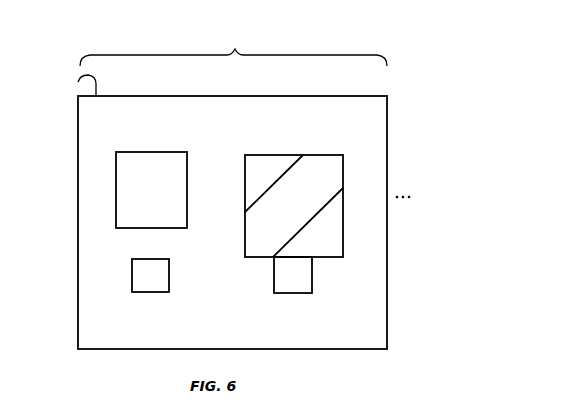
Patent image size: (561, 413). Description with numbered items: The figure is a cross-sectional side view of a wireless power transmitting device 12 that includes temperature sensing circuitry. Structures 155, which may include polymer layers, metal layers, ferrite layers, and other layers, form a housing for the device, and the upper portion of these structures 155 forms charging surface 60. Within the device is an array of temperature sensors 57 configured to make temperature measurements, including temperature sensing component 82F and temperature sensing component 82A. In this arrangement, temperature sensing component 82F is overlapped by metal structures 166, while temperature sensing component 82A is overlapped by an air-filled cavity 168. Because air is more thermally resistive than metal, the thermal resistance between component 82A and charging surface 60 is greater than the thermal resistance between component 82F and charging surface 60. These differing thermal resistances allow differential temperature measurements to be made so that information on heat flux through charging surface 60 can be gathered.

The wireless power transmitting device 12 is at (456, 75).
The array of temperature sensors 57 is at (233, 48).
The charging surface 60 is at (78, 80).
The structures 155 is at (375, 118).
The metal structures 166 is at (330, 235).
The air-filled cavity 168 is at (128, 190).
The temperature sensing component 82A is at (146, 300).
The temperature sensing component 82F is at (300, 283).